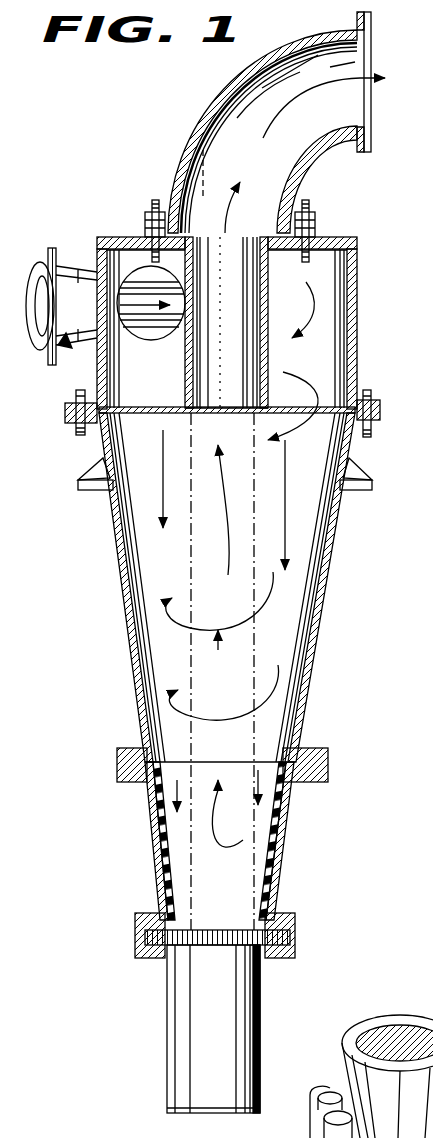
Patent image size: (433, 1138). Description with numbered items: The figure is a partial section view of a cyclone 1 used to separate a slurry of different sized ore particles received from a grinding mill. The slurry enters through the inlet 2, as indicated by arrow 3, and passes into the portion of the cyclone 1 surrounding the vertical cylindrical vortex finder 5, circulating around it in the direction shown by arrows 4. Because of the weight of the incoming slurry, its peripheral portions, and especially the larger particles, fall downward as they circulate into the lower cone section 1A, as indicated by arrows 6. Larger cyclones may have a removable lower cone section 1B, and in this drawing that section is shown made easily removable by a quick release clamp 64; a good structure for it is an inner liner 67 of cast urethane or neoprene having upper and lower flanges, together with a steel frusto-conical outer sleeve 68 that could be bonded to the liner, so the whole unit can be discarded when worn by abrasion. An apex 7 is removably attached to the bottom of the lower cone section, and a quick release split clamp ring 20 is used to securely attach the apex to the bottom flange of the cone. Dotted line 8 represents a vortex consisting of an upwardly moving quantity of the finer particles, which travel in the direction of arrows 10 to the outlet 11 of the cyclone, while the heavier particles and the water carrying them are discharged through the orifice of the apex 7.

The cyclone 1 is at (104, 598).
The lower cone section 1A is at (320, 628).
The lower cone section 1B is at (297, 858).
The inlet 2 is at (46, 270).
The arrow 3 is at (143, 300).
The arrow 4 is at (272, 608).
The vortex finder 5 is at (267, 378).
The arrows 6 is at (165, 500).
The apex 7 is at (266, 1006).
The dotted line 8 is at (249, 565).
The arrows 10 is at (381, 81).
The outlet 11 is at (372, 148).
The quick release split clamp ring 20 is at (297, 928).
The quick release clamp 64 is at (328, 750).
The inner liner 67 is at (170, 846).
The outer sleeve 68 is at (278, 897).